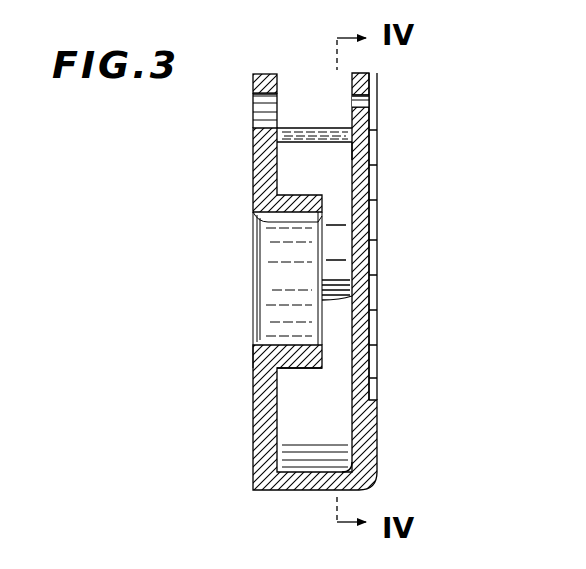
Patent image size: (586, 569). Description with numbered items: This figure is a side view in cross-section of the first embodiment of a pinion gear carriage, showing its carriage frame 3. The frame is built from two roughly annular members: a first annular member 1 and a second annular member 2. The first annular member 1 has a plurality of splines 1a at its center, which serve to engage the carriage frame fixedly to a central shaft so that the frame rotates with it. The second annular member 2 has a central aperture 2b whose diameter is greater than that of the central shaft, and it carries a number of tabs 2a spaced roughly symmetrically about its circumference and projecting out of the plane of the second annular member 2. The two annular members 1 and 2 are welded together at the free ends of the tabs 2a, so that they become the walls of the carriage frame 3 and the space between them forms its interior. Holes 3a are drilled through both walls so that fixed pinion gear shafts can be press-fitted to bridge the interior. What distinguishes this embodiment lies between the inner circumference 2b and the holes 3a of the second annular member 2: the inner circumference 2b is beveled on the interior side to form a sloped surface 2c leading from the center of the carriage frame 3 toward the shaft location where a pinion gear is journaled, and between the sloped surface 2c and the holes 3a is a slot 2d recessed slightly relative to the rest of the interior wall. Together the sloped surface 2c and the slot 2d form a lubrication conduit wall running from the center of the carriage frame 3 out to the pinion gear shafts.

The first annular member 1 is at (262, 399).
The splines 1a is at (313, 368).
The second annular member 2 is at (378, 453).
The tabs 2a is at (343, 128).
The central aperture 2b is at (374, 164).
The sloped surface 2c is at (368, 146).
The slot 2d is at (350, 143).
The carriage frame 3 is at (268, 66).
The holes 3a is at (268, 100).